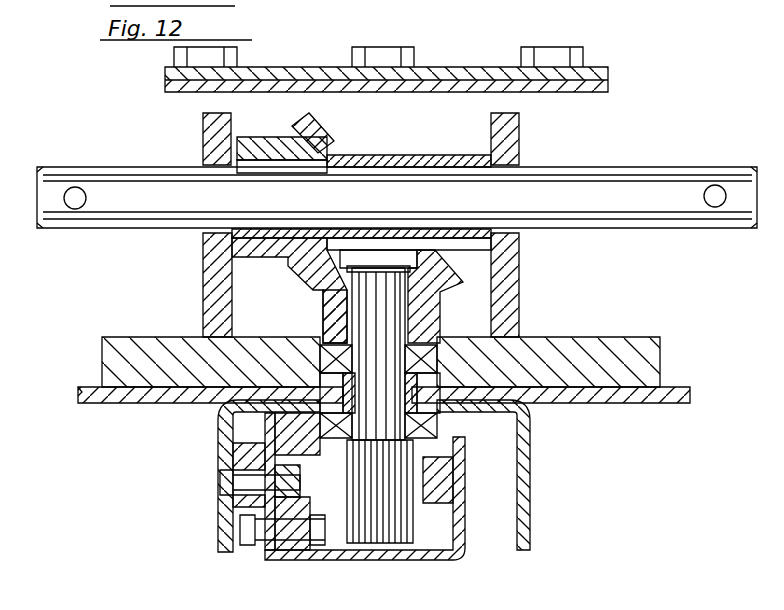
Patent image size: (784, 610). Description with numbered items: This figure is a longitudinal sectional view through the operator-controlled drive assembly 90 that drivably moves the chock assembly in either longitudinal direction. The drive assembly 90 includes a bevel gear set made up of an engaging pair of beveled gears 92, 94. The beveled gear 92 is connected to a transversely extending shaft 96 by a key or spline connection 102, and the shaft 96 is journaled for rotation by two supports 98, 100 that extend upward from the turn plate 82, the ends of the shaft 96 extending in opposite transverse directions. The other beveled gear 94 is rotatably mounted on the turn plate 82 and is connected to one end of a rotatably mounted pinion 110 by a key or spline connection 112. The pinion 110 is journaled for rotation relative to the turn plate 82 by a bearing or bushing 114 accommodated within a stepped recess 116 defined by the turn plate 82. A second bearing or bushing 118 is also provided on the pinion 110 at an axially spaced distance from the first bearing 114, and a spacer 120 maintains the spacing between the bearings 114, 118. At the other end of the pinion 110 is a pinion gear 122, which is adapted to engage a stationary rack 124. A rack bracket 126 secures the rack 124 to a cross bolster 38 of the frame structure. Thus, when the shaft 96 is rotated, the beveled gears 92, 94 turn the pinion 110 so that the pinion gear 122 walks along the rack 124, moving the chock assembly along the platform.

The cross bolster 38 is at (224, 462).
The turn plate 82 is at (592, 339).
The drive assembly 90 is at (440, 312).
The beveled gear 92 is at (302, 131).
The beveled gear 94 is at (441, 270).
The shaft 96 is at (124, 222).
The support 98 is at (212, 130).
The support 100 is at (510, 128).
The key or spline connection 102 is at (318, 162).
The pinion 110 is at (395, 410).
The key or spline connection 112 is at (330, 302).
The bearing or bushing 114 is at (324, 356).
The stepped recess 116 is at (322, 352).
The second bearing or bushing 118 is at (440, 422).
The spacer 120 is at (420, 390).
The pinion gear 122 is at (405, 520).
The stationary rack 124 is at (445, 482).
The rack bracket 126 is at (458, 548).